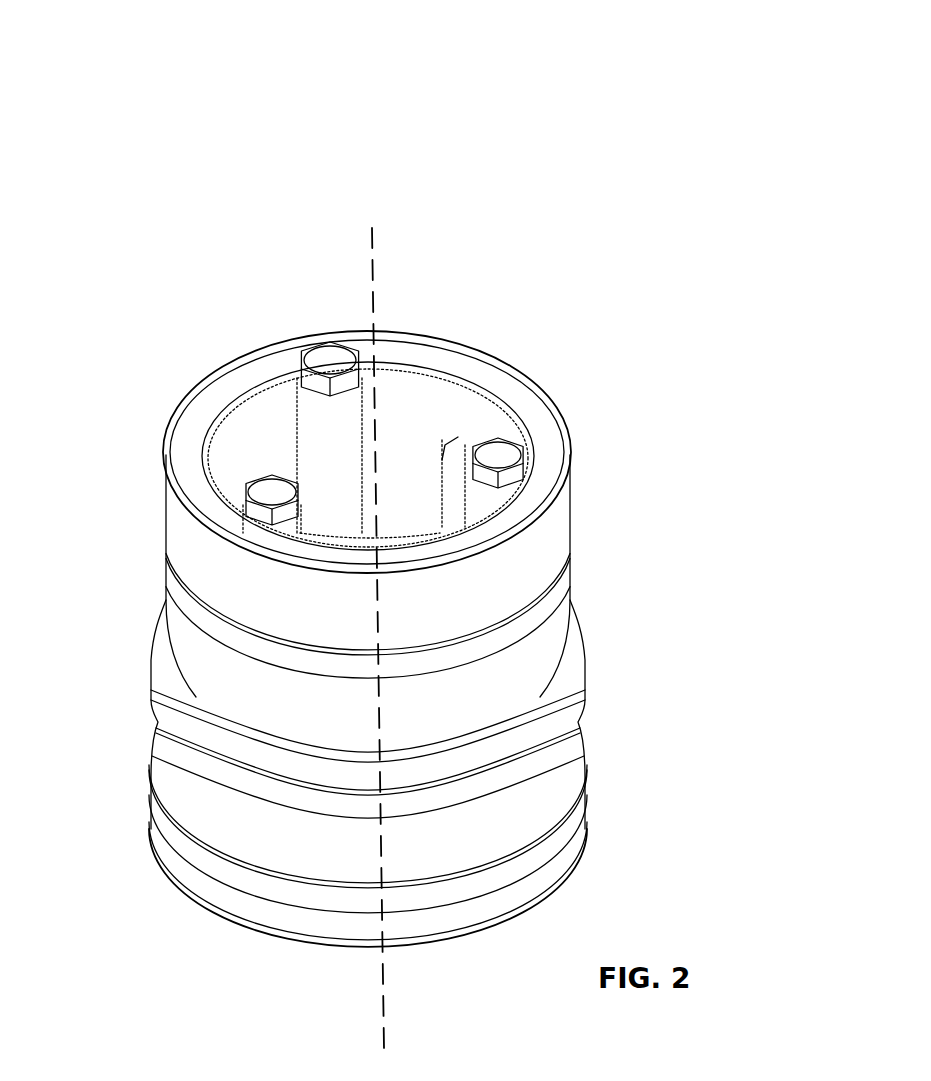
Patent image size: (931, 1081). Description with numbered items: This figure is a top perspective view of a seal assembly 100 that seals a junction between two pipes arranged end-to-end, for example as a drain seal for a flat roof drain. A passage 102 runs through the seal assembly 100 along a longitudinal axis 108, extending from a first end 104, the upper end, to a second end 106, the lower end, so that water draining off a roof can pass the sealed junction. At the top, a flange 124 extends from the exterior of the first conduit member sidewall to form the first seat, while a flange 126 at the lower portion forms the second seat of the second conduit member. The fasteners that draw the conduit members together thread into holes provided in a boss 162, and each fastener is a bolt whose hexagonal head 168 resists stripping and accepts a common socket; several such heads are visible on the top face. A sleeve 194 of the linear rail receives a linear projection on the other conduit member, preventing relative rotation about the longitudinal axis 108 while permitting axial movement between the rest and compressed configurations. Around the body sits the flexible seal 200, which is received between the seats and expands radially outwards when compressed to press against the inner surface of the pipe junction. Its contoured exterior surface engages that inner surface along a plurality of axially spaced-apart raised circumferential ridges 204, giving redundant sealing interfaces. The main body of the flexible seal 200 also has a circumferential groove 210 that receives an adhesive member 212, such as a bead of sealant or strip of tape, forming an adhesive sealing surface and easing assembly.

The seal assembly 100 is at (736, 80).
The passage 102 is at (340, 454).
The first end 104 is at (368, 901).
The second end 106 is at (263, 289).
The longitudinal axis 108 is at (383, 251).
The flange 124 is at (489, 357).
The flange 126 is at (240, 920).
The boss 162 is at (353, 406).
The hexagonal head 168 is at (267, 484).
The sleeve 194 is at (462, 447).
The flexible seal 200 is at (774, 633).
The raised circumferential ridges 204 is at (429, 679).
The circumferential groove 210 is at (170, 687).
The adhesive member 212 is at (150, 713).